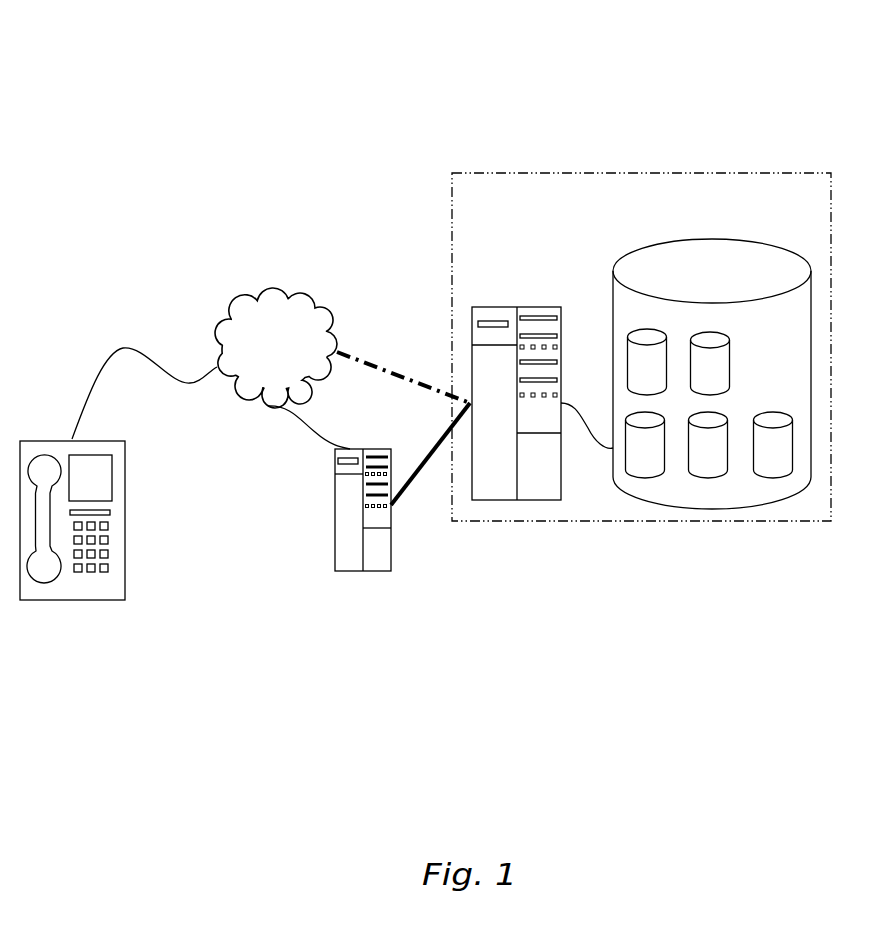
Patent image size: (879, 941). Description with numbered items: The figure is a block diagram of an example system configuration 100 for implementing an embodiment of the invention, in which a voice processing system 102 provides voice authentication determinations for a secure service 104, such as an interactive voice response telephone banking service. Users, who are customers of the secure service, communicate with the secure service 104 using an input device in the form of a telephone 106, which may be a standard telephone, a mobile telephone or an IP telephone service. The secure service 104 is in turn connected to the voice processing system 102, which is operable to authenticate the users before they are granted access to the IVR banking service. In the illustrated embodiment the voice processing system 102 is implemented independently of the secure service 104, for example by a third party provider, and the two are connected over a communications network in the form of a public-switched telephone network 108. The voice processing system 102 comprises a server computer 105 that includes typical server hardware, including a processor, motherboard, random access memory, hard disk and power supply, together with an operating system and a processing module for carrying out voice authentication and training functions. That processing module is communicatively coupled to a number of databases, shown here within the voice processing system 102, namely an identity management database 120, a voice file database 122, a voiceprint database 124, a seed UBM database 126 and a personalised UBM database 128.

The system configuration 100 is at (100, 96).
The voice processing system 102 is at (640, 168).
The secure service 104 is at (331, 538).
The server computer 105 is at (503, 301).
The telephone 106 is at (128, 523).
The public-switched telephone network 108 is at (282, 287).
The identity management database 120 is at (646, 481).
The voice file database 122 is at (709, 481).
The voiceprint database 124 is at (774, 481).
The seed UBM database 126 is at (648, 322).
The personalised UBM database 128 is at (710, 325).